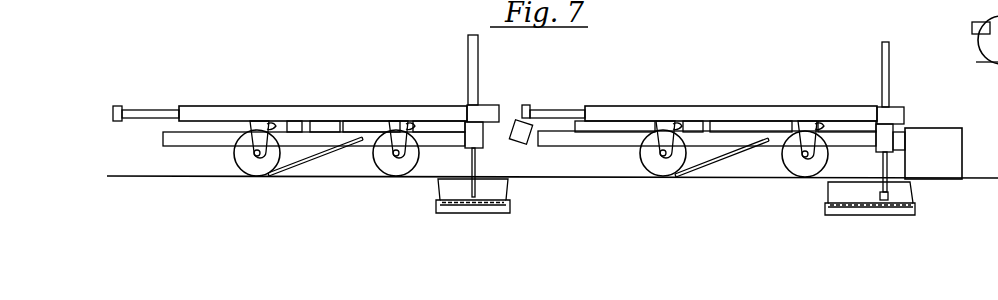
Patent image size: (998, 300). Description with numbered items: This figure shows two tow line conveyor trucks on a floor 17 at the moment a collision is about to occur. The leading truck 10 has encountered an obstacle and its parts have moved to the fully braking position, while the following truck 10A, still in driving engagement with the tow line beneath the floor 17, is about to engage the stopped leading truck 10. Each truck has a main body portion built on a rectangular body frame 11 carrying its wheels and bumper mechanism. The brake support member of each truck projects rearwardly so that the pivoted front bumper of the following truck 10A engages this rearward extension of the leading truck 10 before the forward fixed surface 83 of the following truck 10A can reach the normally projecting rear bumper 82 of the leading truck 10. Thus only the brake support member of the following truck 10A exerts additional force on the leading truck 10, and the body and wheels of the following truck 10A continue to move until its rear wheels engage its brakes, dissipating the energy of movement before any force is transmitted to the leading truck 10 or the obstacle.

The following truck 10A is at (361, 80).
The leading truck 10 is at (734, 80).
The floor 17 is at (593, 177).
The rear bumper 82 is at (527, 105).
The forward fixed surface 83 is at (490, 105).
The body frame 11 is at (962, 133).